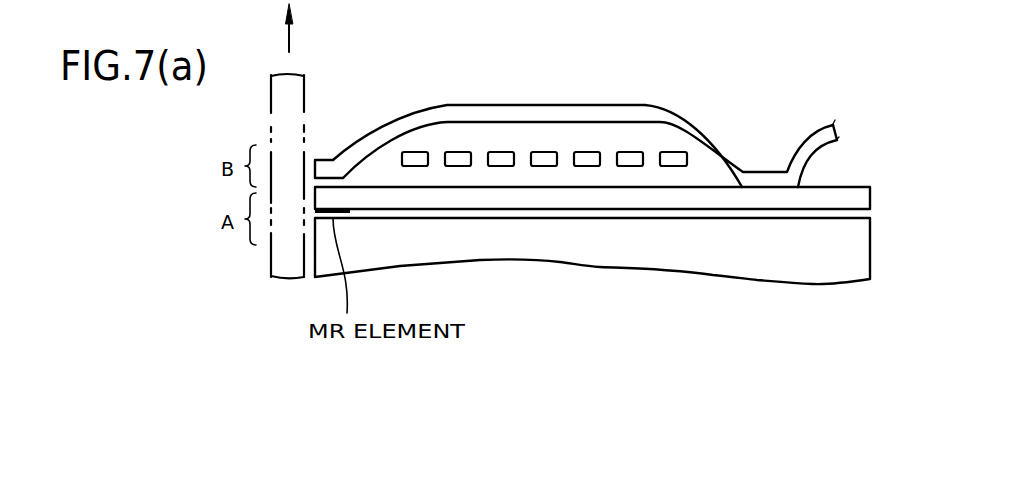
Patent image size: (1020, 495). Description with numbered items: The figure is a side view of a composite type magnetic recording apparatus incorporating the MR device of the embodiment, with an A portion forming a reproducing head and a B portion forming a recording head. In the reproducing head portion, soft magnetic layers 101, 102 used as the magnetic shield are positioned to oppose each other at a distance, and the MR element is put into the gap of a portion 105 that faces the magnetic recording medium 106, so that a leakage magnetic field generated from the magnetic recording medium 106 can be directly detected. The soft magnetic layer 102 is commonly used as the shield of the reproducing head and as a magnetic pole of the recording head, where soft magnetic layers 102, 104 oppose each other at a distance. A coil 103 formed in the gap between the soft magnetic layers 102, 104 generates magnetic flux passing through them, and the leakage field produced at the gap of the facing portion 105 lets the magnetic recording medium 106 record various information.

The soft magnetic layer 101 is at (768, 252).
The soft magnetic layer 102 is at (573, 200).
The coil 103 is at (635, 166).
The soft magnetic layer 104 is at (592, 113).
The facing portion 105 is at (327, 157).
The magnetic recording medium 106 is at (282, 277).